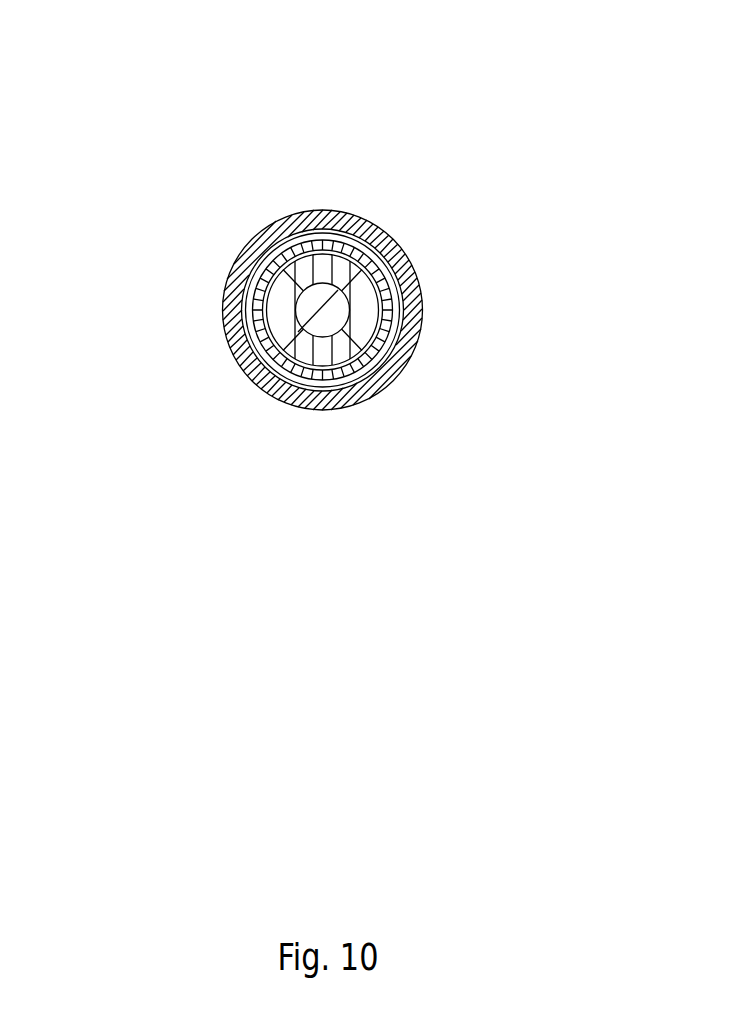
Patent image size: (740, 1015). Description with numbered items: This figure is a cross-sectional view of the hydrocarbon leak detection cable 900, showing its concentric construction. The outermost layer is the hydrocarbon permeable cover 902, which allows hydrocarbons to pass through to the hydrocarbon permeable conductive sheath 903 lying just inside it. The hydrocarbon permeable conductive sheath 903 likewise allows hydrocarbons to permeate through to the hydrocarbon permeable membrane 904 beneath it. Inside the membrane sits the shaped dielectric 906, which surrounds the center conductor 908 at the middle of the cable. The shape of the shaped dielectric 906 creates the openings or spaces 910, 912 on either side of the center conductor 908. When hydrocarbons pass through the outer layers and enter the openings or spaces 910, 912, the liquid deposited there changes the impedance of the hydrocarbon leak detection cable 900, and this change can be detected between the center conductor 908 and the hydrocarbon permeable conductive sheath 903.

The hydrocarbon leak detection cable 900 is at (460, 110).
The hydrocarbon permeable cover 902 is at (390, 252).
The hydrocarbon permeable conductive sheath 903 is at (318, 380).
The hydrocarbon permeable membrane 904 is at (400, 335).
The shaped dielectric 906 is at (262, 352).
The center conductor 908 is at (322, 310).
The opening or space 910 is at (367, 313).
The opening or space 912 is at (293, 352).